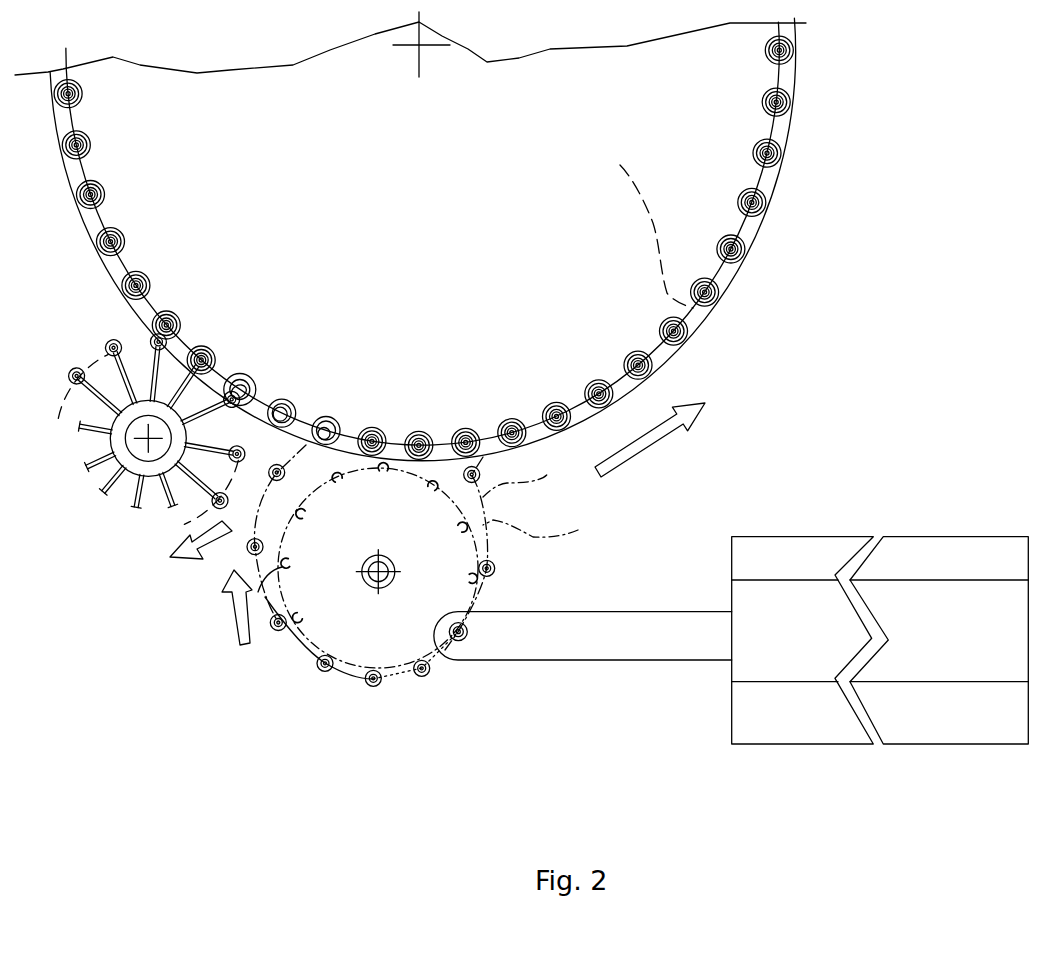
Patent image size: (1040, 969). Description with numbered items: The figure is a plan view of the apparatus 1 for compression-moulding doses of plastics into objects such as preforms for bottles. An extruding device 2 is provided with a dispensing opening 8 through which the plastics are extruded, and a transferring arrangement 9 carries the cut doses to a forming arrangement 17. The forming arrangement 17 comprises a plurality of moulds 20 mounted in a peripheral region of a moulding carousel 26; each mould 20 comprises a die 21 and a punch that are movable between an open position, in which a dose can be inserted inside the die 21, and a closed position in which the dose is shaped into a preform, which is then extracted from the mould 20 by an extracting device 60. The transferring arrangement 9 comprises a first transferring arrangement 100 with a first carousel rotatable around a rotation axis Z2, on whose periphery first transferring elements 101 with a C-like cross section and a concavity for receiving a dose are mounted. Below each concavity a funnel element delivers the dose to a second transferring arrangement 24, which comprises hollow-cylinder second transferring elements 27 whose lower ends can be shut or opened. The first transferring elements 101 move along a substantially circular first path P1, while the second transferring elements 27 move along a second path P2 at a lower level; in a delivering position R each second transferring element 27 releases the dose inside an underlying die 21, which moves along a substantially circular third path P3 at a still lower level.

The apparatus 1 is at (170, 731).
The extruding device 2 is at (637, 645).
The dispensing opening 8 is at (480, 620).
The transferring arrangement 9 is at (453, 673).
The forming arrangement 17 is at (822, 68).
The mould 20 is at (782, 150).
The die 21 is at (245, 382).
The second transferring arrangement 24 is at (230, 558).
The moulding carousel 26 is at (542, 174).
The second transferring element 27 is at (496, 568).
The extracting device 60 is at (78, 494).
The first transferring arrangement 100 is at (348, 675).
The first transferring element 101 is at (255, 555).
The first path P1 is at (597, 520).
The second path P2 is at (560, 460).
The third path P3 is at (645, 220).
The delivering position R is at (403, 415).
The rotation axis Z2 is at (382, 578).